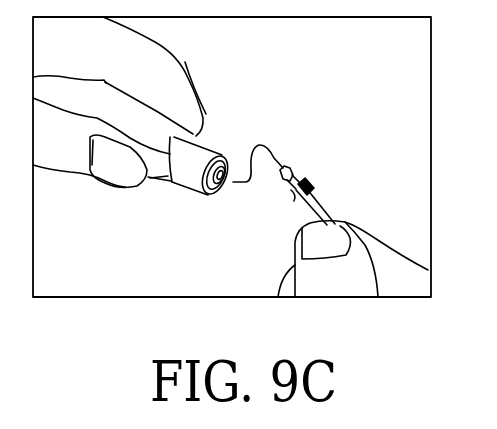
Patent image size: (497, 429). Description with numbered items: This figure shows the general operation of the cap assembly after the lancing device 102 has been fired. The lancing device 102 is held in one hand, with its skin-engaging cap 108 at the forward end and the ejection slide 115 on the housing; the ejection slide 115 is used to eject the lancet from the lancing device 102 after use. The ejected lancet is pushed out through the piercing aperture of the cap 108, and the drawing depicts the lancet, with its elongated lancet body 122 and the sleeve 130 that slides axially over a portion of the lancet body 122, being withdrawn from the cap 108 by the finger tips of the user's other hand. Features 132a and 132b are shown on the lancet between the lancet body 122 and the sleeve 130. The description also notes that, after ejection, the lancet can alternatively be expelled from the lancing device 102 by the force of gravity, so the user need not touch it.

The lancing device 102 is at (157, 113).
The skin-engaging cap 108 is at (205, 139).
The ejection slide 115 is at (158, 178).
The lancet body 122 is at (289, 165).
The sleeve 130 is at (330, 213).
The connector collar 132a is at (291, 199).
The connector plug 132b is at (313, 187).